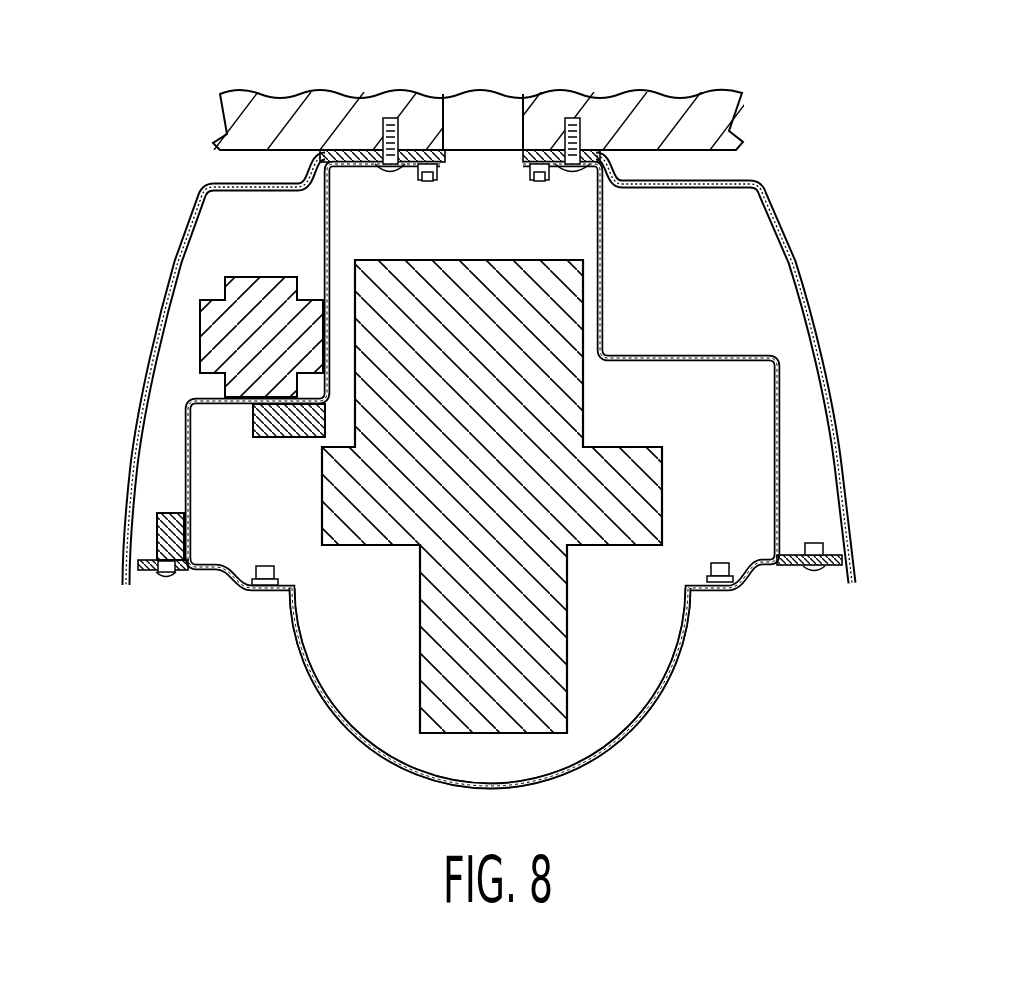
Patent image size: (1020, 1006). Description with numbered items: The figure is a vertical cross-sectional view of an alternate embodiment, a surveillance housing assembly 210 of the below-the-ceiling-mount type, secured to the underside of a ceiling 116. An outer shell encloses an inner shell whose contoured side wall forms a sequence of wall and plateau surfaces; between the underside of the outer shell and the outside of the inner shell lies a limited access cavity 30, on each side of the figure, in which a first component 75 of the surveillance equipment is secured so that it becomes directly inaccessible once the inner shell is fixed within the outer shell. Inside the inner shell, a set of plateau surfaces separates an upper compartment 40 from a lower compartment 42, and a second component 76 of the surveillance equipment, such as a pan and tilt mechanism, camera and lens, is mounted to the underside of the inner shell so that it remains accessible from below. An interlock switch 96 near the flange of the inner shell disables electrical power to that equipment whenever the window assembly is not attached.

The ceiling 116 is at (690, 90).
The surveillance housing assembly 210 is at (832, 272).
The limited access cavity 30 is at (279, 246).
The upper compartment 40 is at (492, 234).
The component 75 is at (200, 328).
The lower compartment 42 is at (267, 517).
The interlock switch 96 is at (157, 543).
The component 76 is at (543, 712).